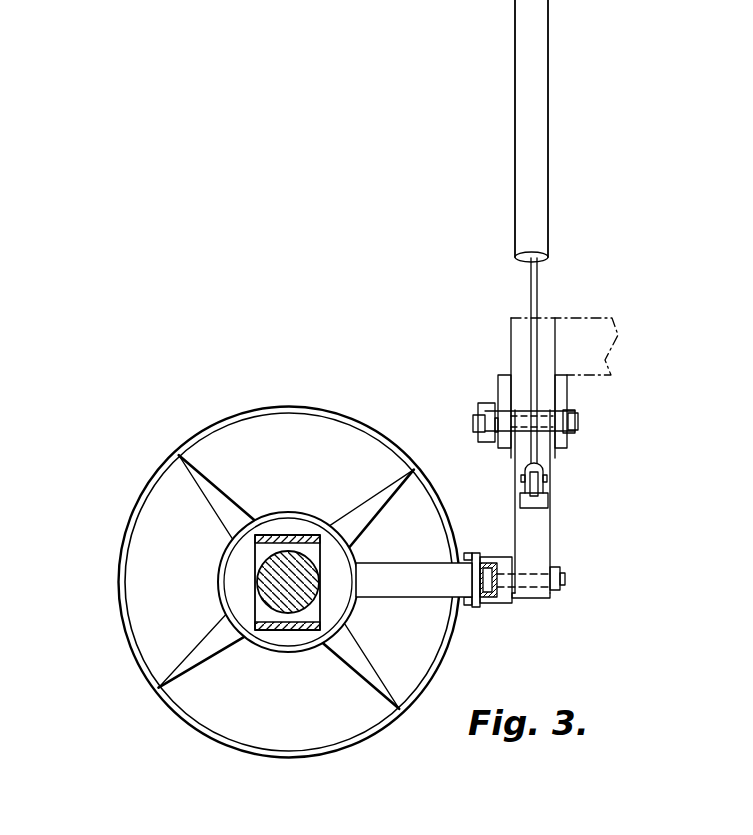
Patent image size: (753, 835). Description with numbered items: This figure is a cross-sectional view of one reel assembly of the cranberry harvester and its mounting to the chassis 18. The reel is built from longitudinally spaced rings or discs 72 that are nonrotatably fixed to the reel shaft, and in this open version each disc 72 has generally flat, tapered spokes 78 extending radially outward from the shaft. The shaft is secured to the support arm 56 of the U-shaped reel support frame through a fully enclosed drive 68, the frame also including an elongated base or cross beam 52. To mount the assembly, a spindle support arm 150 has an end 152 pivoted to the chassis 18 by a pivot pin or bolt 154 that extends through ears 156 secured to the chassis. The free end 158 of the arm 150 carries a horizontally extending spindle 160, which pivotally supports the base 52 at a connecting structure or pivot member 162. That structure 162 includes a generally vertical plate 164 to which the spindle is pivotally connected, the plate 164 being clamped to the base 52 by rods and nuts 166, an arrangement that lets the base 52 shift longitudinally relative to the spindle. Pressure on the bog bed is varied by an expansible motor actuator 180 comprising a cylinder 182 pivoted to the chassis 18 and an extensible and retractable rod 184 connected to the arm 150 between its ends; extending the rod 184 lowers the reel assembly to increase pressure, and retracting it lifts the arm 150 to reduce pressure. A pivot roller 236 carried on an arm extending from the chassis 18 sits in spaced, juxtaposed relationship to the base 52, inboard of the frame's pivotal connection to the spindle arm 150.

The chassis 18 is at (585, 318).
The base or cross beam 52 is at (472, 555).
The support arm 56 is at (398, 583).
The fully enclosed drive 68 is at (251, 549).
The ring or disc 72 is at (289, 549).
The flat tapered spoke 78 is at (368, 503).
The spindle support arm 150 is at (533, 522).
The end of spindle support arm 152 is at (547, 413).
The pivot pin or bolt 154 is at (487, 441).
The ears 156 is at (498, 390).
The free end of spindle support arm 158 is at (545, 571).
The spindle 160 is at (545, 597).
The connecting structure or pivot member 162 is at (473, 583).
The vertical plate 164 is at (505, 608).
The rods and nuts 166 is at (468, 607).
The expansible motor actuator 180 is at (490, 64).
The cylinder 182 is at (548, 67).
The extensible and retractable rod 184 is at (531, 276).
The pivot roller 236 is at (473, 420).